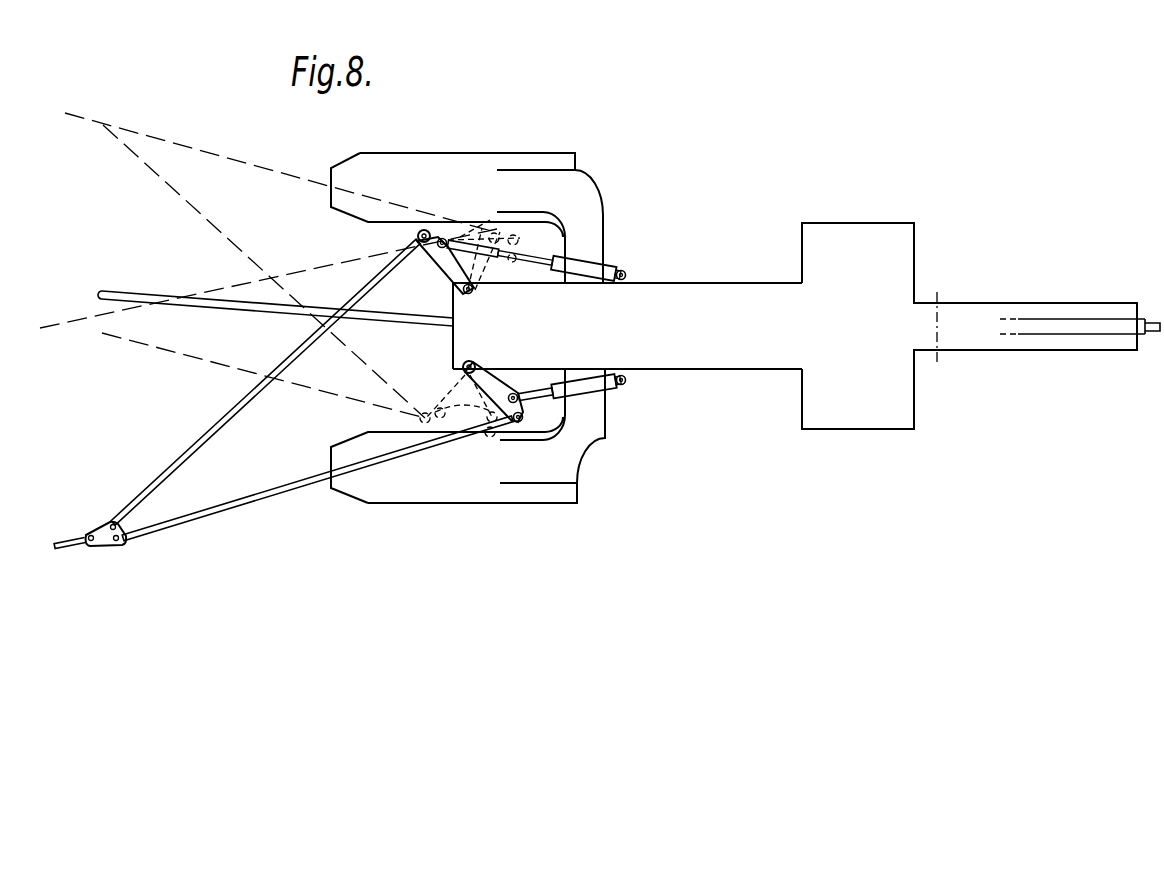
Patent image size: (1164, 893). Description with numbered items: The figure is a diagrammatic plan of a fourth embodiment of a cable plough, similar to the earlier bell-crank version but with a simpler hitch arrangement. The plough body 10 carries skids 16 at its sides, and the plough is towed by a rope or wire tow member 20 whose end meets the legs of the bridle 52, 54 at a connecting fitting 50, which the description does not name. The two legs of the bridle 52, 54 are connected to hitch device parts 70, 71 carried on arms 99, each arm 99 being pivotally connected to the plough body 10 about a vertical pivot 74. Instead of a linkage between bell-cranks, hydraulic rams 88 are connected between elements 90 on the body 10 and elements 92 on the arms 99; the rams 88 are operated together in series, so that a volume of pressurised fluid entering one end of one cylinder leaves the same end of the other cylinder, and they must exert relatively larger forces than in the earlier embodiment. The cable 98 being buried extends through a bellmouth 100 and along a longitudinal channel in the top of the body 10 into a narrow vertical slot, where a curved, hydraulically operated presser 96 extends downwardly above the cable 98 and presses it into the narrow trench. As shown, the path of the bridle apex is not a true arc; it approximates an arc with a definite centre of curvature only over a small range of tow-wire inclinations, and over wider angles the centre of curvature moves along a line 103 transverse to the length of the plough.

The plough body 10 is at (717, 300).
The skids 16 is at (447, 153).
The tow member 20 is at (73, 540).
The mounting plate 50 is at (108, 545).
The bridle 52 is at (203, 440).
The bridle 54 is at (210, 513).
The hitch device part 70 is at (418, 236).
The hitch device part 71 is at (520, 422).
The vertical pivot 74 is at (470, 362).
The ram 88 is at (588, 261).
The element 90 is at (625, 273).
The element 92 is at (442, 238).
The presser 96 is at (1062, 328).
The cable 98 is at (153, 290).
The arm 99 is at (447, 265).
The bellmouth 100 is at (452, 335).
The line 103 is at (937, 292).